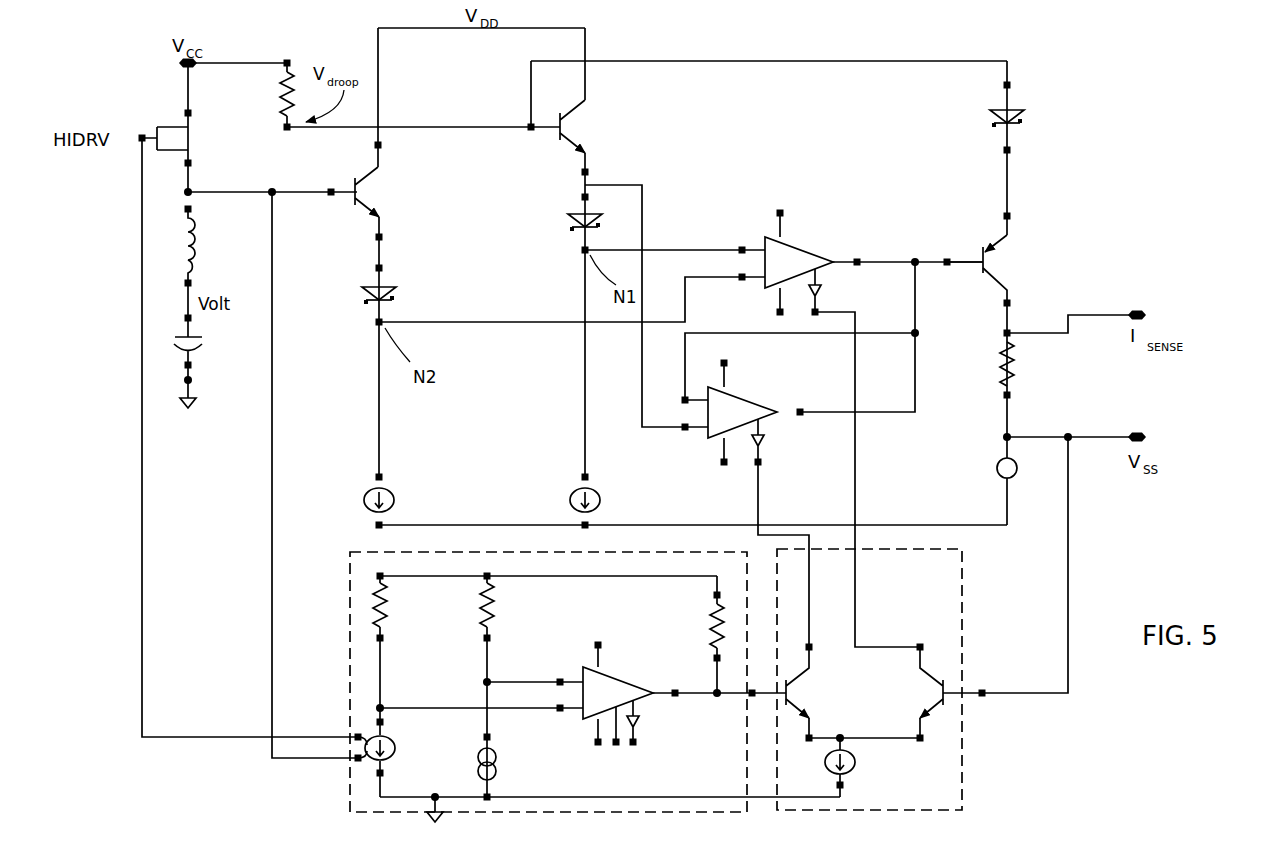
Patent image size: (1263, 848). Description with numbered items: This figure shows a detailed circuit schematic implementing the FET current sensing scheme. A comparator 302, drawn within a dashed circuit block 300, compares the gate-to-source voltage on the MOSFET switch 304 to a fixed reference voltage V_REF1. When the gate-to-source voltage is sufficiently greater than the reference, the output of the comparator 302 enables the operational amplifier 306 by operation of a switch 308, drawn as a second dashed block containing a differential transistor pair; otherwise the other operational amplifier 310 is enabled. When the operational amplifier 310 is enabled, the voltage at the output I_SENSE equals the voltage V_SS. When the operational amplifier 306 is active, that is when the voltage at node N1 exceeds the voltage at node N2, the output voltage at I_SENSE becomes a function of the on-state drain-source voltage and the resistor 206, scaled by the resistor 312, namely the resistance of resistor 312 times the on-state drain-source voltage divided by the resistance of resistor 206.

The resistor 206 is at (275, 95).
The comparator circuit 300 is at (345, 783).
The comparator 302 is at (582, 735).
The MOSFET switch 304 is at (185, 137).
The operational amplifier 306 is at (822, 247).
The switch 308 is at (965, 738).
The operational amplifier 310 is at (704, 447).
The resistor 312 is at (1022, 367).